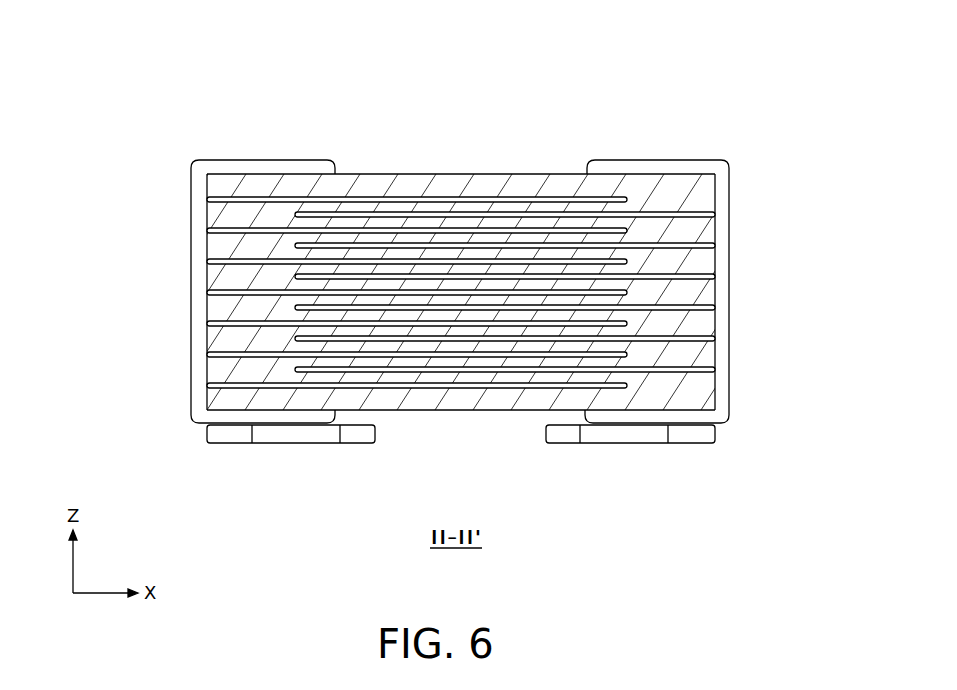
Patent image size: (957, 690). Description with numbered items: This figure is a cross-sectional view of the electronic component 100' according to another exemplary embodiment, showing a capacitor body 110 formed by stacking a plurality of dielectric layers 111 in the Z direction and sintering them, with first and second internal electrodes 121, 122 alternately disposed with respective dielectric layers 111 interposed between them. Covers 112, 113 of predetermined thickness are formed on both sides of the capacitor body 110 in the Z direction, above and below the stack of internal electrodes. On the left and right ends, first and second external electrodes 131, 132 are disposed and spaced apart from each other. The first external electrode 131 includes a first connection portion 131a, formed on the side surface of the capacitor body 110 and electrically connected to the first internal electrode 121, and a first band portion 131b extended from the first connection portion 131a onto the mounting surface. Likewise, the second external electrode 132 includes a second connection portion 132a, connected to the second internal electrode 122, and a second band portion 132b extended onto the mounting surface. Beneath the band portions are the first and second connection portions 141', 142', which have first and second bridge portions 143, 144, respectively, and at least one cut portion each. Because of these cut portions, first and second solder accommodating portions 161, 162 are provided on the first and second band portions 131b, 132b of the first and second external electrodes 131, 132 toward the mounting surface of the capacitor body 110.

The electronic component 100' is at (461, 267).
The capacitor body 110 is at (462, 174).
The dielectric layers 111 is at (676, 322).
The cover 112 is at (410, 186).
The cover 113 is at (466, 412).
The first internal electrode 121 is at (358, 197).
The second internal electrode 122 is at (524, 211).
The first external electrode 131 is at (190, 295).
The first connection portion 131a is at (195, 378).
The first band portion 131b is at (205, 421).
The second external electrode 132 is at (731, 295).
The second connection portion 132a is at (720, 378).
The second band portion 132b is at (692, 414).
The first connection portion 141' is at (291, 473).
The second connection portion 142' is at (630, 474).
The first bridge portion 143 is at (350, 445).
The second bridge portion 144 is at (567, 445).
The first solder accommodating portion 161 is at (225, 445).
The second solder accommodating portion 162 is at (695, 445).